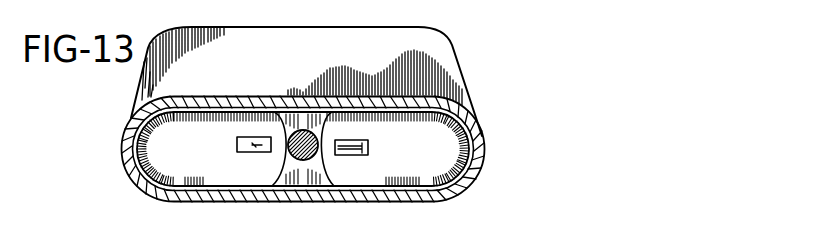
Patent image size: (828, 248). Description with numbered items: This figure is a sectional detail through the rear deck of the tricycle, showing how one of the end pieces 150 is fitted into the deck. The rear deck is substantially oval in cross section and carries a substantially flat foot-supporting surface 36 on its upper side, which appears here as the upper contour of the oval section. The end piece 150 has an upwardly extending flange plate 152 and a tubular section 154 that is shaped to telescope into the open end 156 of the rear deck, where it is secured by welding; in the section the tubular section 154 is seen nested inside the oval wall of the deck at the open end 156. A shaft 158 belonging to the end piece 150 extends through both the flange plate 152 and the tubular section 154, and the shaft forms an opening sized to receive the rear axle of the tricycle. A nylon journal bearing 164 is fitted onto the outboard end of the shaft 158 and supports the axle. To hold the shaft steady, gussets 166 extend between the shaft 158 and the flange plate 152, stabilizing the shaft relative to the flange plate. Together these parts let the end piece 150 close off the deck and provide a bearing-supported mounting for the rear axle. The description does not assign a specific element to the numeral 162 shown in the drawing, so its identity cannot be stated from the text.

The end piece 150 is at (466, 70).
The flange plate 152 is at (428, 46).
The tubular section 154 is at (472, 138).
The open end of the rear deck 156 is at (420, 167).
The shaft 158 is at (270, 162).
The lamp 162 is at (304, 130).
The nylon journal bearing 164 is at (303, 160).
The gussets 166 is at (237, 151).
The foot-supporting surface 36 is at (486, 157).